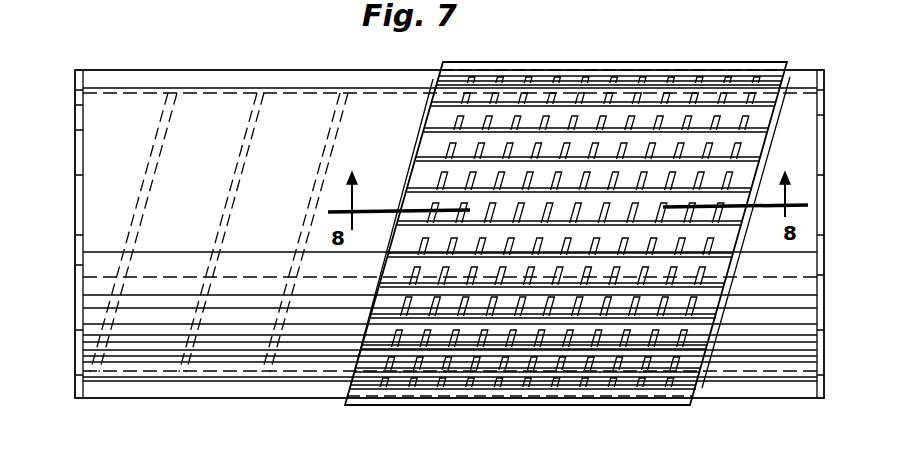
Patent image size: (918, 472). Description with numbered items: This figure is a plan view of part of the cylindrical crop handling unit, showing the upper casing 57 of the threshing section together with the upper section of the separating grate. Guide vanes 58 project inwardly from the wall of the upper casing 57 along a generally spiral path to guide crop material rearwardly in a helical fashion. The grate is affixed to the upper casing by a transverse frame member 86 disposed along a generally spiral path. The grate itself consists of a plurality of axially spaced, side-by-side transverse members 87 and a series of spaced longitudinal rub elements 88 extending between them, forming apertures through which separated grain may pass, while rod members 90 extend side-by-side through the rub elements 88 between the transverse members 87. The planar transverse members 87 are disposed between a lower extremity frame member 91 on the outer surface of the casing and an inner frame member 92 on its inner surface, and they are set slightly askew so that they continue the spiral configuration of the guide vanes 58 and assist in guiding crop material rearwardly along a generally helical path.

The upper casing 57 is at (208, 224).
The guide vanes 58 is at (165, 149).
The transverse frame member 86 is at (418, 151).
The transverse members 87 is at (530, 101).
The longitudinal rub elements 88 is at (406, 406).
The rod members 90 is at (440, 178).
The lower extremity frame member 91 is at (206, 398).
The inner frame member 92 is at (206, 70).